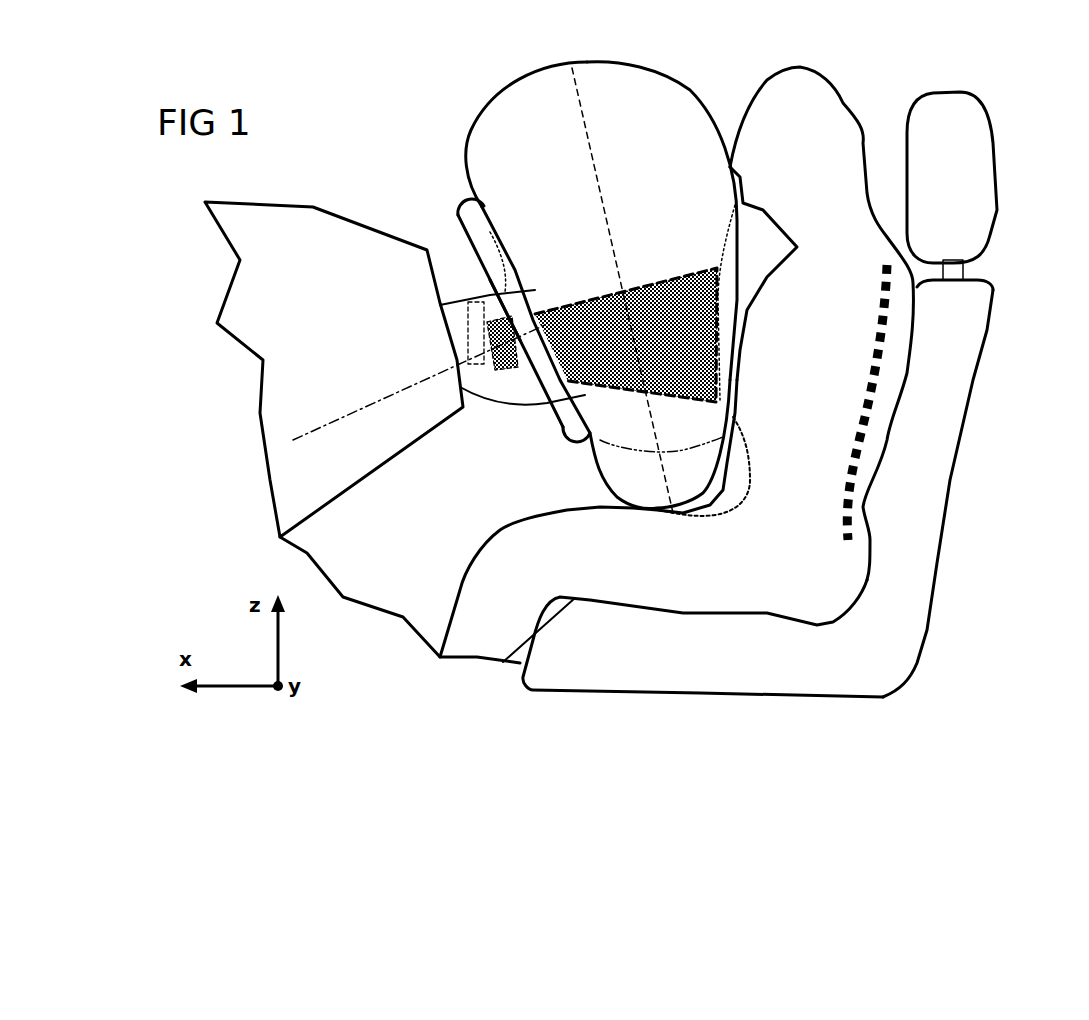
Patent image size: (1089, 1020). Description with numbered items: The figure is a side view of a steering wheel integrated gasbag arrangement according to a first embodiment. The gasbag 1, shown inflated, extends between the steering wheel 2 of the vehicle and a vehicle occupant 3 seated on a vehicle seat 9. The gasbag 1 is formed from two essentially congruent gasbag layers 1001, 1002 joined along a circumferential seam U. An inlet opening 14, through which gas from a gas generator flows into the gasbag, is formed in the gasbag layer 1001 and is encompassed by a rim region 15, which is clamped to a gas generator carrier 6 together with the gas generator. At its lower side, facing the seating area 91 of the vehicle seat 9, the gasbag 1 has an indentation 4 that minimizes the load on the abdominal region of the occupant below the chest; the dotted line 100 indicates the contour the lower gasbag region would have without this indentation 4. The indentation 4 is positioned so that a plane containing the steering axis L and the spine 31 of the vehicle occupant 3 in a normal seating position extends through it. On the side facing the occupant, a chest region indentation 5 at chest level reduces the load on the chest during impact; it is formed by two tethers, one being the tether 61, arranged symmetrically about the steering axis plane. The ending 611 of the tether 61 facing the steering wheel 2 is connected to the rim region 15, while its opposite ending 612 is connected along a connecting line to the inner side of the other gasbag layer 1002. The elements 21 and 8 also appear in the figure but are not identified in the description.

The gasbag 1 is at (571, 270).
The gasbag layer 1001 is at (535, 100).
The gasbag layer 1002 is at (633, 90).
The steering wheel 2 is at (501, 324).
The strap end 21 is at (575, 437).
The inlet opening 14 is at (500, 317).
The rim region 15 is at (482, 306).
The vehicle occupant 3 is at (893, 298).
The spine 31 is at (877, 397).
The indentation 4 is at (647, 467).
The chest region indentation 5 is at (725, 233).
The gas generator carrier 6 is at (483, 330).
The tether 61 is at (626, 339).
The ending of tether 611 is at (512, 367).
The ending of tether 612 is at (690, 387).
The shoulder line 8 is at (693, 450).
The vehicle seat 9 is at (792, 518).
The seating area 91 is at (757, 658).
The dotted line 100 is at (750, 453).